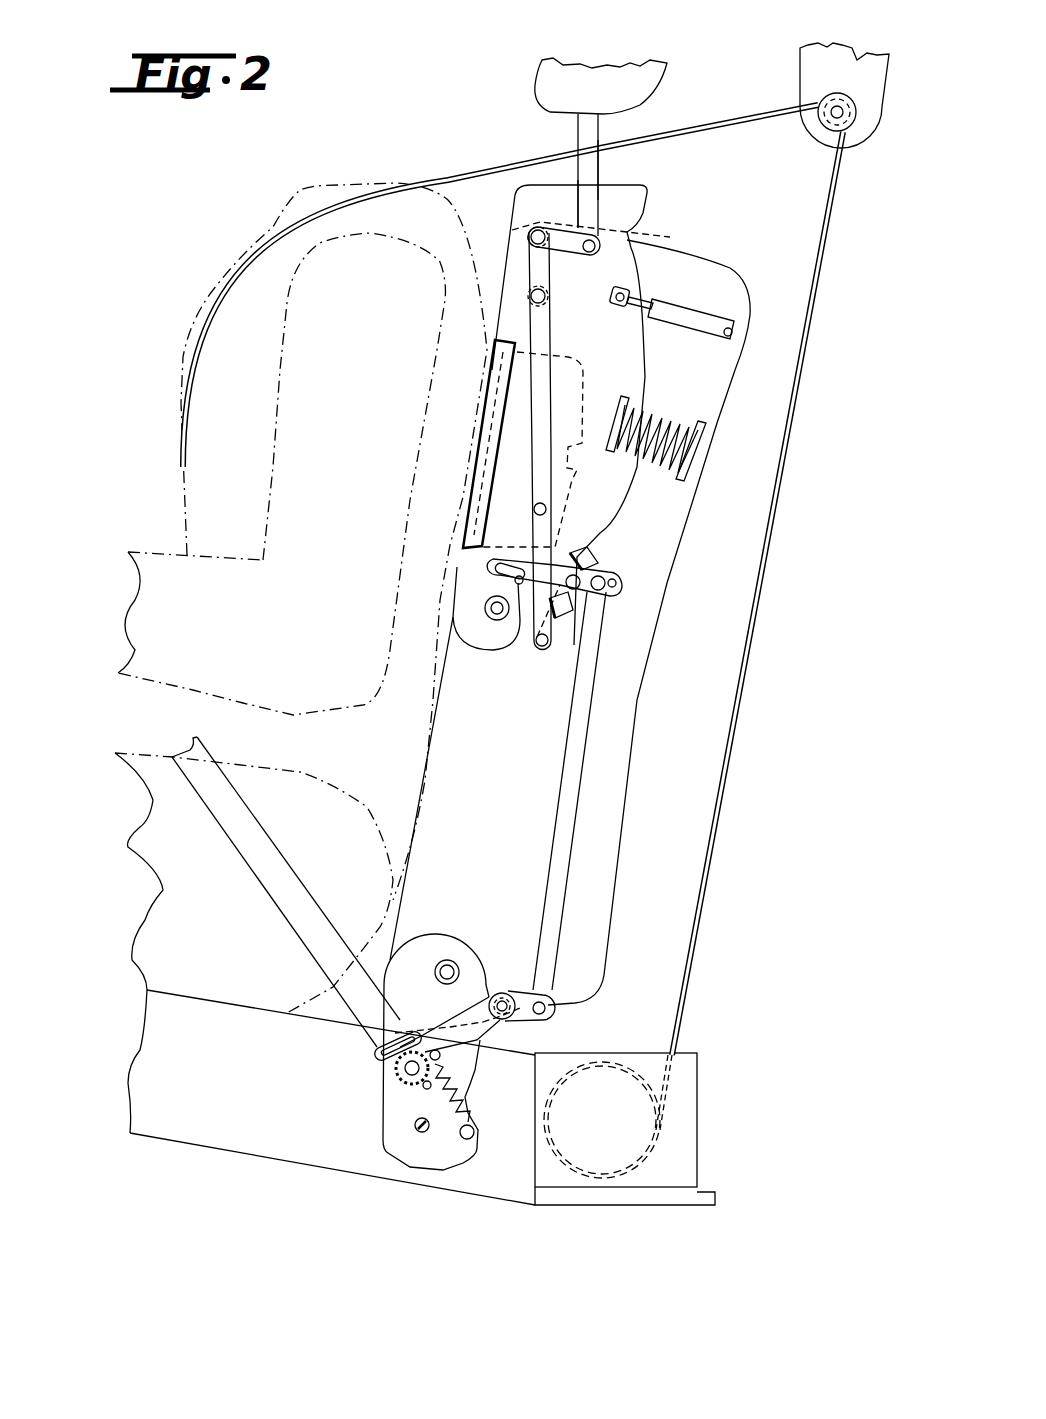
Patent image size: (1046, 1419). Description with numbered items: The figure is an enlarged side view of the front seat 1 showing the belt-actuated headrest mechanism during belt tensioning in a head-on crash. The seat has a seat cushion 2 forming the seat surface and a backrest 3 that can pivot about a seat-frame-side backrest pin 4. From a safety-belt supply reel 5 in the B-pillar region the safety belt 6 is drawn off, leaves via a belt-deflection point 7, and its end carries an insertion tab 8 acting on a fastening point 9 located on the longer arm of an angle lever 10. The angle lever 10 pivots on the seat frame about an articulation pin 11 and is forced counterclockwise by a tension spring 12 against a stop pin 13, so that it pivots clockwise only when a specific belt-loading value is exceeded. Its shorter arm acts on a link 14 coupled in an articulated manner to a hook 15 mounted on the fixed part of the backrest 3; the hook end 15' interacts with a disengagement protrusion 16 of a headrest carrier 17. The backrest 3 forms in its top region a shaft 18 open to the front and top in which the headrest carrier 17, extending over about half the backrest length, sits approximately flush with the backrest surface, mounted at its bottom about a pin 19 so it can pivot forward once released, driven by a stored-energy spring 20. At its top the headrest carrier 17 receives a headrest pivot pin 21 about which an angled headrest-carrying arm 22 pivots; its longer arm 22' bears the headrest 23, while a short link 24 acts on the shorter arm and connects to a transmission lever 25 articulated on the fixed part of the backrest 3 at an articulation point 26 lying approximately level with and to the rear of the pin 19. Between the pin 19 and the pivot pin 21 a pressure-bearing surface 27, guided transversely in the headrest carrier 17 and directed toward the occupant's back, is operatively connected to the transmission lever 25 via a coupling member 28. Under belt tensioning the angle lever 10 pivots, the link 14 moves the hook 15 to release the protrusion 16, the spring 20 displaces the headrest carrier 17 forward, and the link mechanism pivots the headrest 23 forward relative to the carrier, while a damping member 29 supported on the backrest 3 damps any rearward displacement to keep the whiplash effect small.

The front seat 1 is at (174, 1193).
The seat cushion 2 is at (247, 1132).
The backrest 3 is at (620, 693).
The backrest pin 4 is at (448, 968).
The safety-belt supply reel 5 is at (640, 1130).
The safety belt 6 is at (717, 840).
The belt-deflection point 7 is at (837, 112).
The insertion tab 8 is at (393, 1042).
The fastening point 9 is at (410, 1073).
The angle lever 10 is at (470, 1045).
The articulation pin 11 is at (504, 995).
The tension spring 12 is at (470, 1040).
The stop pin 13 is at (432, 1078).
The link 14 is at (552, 913).
The hook 15 is at (693, 573).
The hook end 15' is at (424, 568).
The disengagement protrusion 16 is at (518, 583).
The headrest carrier 17 is at (638, 362).
The shaft 18 is at (627, 240).
The pin 19 is at (484, 608).
The stored-energy spring 20 is at (680, 438).
The headrest pivot pin 21 is at (598, 246).
The headrest-carrying arm 22 is at (507, 160).
The longer arm 22' is at (664, 170).
The headrest 23 is at (607, 70).
The short link 24 is at (538, 268).
The transmission lever 25 is at (540, 383).
The articulation point 26 is at (543, 652).
The pressure-bearing surface 27 is at (480, 457).
The coupling member 28 is at (533, 509).
The damping member 29 is at (697, 320).